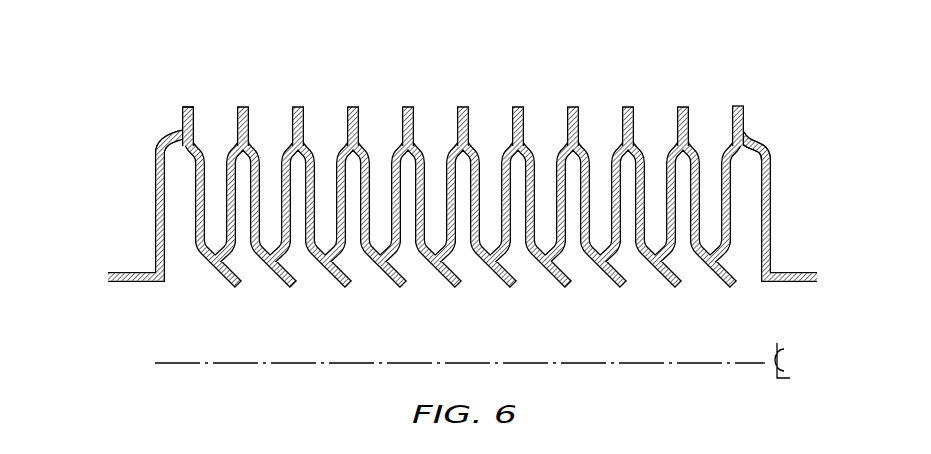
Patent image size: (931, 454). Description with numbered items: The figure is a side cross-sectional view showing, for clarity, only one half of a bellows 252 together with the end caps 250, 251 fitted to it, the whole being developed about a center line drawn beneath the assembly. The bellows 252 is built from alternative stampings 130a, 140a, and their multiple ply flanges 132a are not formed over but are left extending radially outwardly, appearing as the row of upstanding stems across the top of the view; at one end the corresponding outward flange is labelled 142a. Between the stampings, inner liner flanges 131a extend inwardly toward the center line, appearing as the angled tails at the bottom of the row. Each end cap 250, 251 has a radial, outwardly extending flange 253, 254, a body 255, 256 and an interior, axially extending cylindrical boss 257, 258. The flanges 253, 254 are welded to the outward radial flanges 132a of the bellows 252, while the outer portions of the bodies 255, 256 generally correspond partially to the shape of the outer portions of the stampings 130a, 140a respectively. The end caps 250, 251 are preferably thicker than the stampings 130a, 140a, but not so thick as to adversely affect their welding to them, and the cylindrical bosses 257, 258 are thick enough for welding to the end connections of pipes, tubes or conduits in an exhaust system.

The alternative stamping 130a is at (197, 182).
The inner liner flange 131a is at (563, 284).
The multiple ply flange 132a is at (538, 88).
The alternative stamping 140a is at (235, 216).
The end pin 142a is at (732, 118).
The end cap 250 is at (122, 249).
The end cap 251 is at (792, 233).
The bellows 252 is at (276, 67).
The radial outwardly extending flange 253 is at (182, 125).
The radial outwardly extending flange 254 is at (749, 118).
The body 255 is at (155, 202).
The body 256 is at (772, 194).
The cylindrical boss 257 is at (135, 283).
The cylindrical boss 258 is at (797, 284).